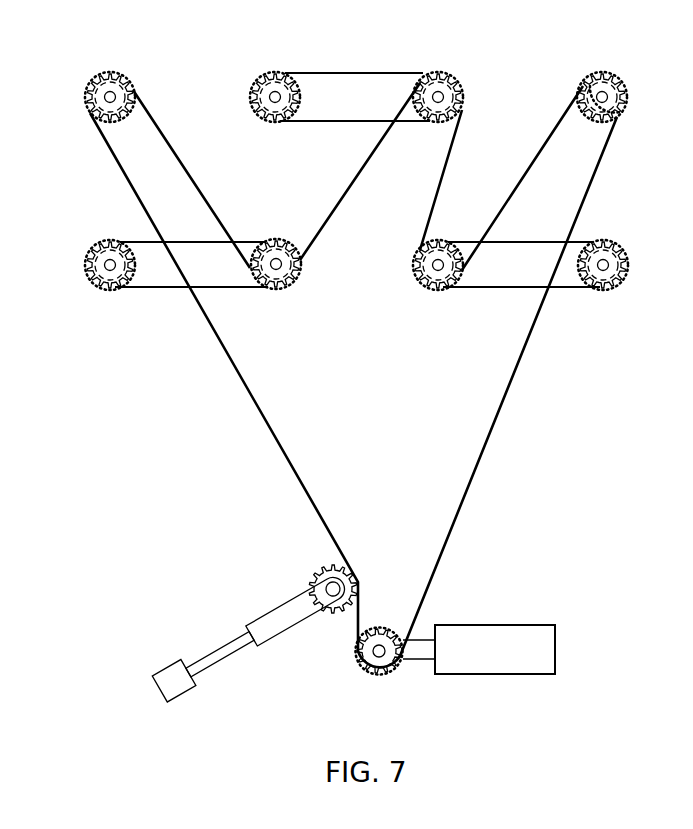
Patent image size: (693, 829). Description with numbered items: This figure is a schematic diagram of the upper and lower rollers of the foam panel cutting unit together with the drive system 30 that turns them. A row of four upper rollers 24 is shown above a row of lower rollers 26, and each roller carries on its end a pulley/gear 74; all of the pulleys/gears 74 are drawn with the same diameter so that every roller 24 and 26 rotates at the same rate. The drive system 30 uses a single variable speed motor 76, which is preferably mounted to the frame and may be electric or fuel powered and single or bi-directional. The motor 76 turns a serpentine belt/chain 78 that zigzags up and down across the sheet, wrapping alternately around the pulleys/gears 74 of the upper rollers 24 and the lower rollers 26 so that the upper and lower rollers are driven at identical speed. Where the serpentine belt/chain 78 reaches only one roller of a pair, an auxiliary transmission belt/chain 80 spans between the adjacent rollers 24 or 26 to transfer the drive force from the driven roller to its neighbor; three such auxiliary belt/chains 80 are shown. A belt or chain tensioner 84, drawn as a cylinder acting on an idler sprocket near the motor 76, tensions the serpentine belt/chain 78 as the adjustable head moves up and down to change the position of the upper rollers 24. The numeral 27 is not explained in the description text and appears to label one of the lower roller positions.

The upper rollers 24 is at (118, 78).
The lower rollers 26 is at (284, 245).
The lower roller shaft 27 is at (112, 247).
The drive system 30 is at (592, 433).
The pulleys/gears 74 is at (106, 93).
The variable speed motor 76 is at (493, 625).
The serpentine belt/chain 78 is at (258, 410).
The auxiliary transmission belt/chains 80 is at (350, 73).
The belt or chain tensioner 84 is at (268, 612).